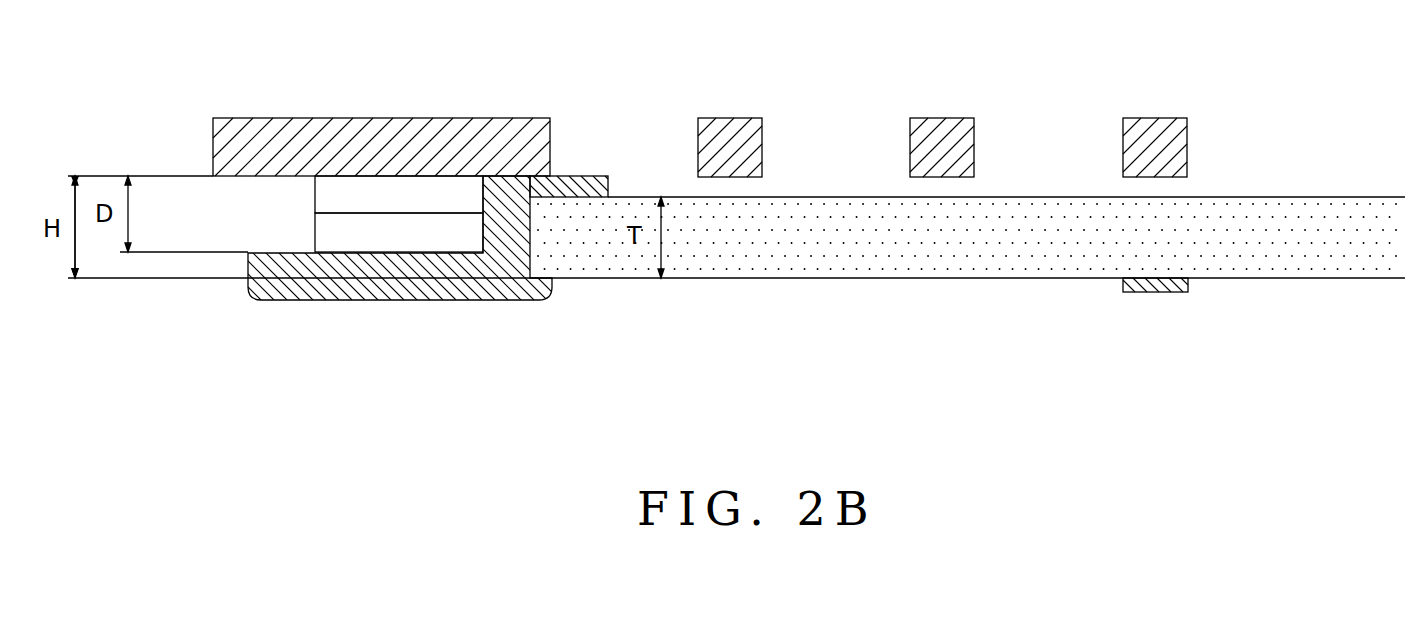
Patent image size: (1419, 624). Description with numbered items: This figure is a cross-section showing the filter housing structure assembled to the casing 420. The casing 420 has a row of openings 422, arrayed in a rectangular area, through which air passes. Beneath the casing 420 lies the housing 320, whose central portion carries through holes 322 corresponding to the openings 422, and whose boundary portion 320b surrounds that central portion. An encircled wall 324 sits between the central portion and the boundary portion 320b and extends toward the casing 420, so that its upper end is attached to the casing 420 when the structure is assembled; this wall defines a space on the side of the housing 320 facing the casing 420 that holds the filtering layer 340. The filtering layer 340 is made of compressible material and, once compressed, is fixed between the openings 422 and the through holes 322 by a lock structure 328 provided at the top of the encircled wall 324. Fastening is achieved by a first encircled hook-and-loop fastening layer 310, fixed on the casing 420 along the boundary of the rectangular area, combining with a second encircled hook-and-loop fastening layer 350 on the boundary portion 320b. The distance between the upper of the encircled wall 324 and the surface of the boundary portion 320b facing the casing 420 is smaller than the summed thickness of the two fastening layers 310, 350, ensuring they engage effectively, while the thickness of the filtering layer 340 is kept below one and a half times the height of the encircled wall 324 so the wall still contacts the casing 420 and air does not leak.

The first encircled hook-and-loop fastening layer 310 is at (315, 201).
The second encircled hook-and-loop fastening layer 350 is at (315, 238).
The housing 320 is at (453, 300).
The boundary portion 320b is at (353, 253).
The encircled wall 324 is at (530, 240).
The lock structure 328 is at (592, 177).
The filtering layer 340 is at (968, 252).
The through holes 322 is at (899, 307).
The casing 420 is at (360, 140).
The openings 422 is at (657, 148).